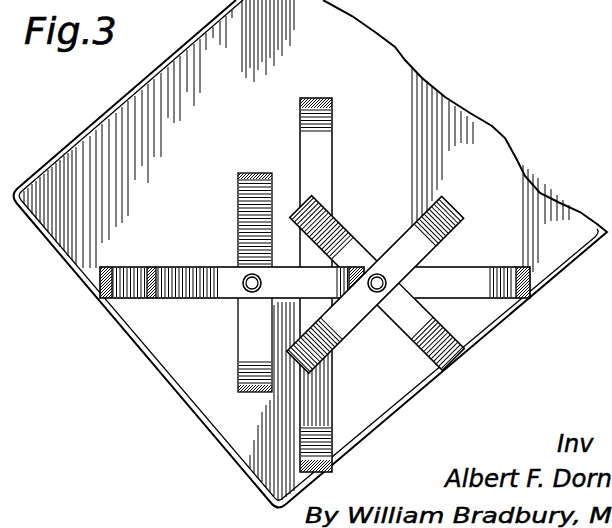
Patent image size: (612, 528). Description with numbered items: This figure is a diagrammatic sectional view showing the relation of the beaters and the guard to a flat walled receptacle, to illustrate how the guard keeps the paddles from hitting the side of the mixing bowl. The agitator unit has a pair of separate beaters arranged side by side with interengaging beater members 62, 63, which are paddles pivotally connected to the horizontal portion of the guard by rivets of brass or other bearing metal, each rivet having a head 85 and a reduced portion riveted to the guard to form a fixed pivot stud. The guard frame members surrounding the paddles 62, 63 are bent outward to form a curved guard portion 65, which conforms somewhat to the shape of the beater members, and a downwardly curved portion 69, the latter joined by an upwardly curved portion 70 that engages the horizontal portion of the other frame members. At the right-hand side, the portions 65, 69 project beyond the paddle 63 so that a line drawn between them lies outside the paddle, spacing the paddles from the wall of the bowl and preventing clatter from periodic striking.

The beater member 62 is at (187, 266).
The beater member 63 is at (240, 178).
The curved guard portion 65 is at (100, 288).
The downwardly curved portion 69 is at (333, 99).
The upwardly curved portion 70 is at (318, 172).
The head 85 is at (251, 286).